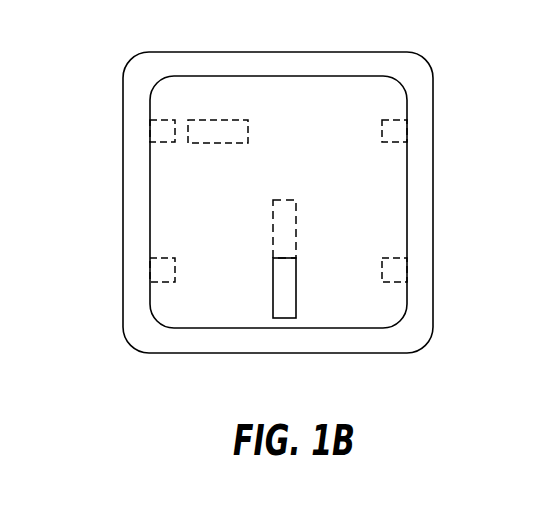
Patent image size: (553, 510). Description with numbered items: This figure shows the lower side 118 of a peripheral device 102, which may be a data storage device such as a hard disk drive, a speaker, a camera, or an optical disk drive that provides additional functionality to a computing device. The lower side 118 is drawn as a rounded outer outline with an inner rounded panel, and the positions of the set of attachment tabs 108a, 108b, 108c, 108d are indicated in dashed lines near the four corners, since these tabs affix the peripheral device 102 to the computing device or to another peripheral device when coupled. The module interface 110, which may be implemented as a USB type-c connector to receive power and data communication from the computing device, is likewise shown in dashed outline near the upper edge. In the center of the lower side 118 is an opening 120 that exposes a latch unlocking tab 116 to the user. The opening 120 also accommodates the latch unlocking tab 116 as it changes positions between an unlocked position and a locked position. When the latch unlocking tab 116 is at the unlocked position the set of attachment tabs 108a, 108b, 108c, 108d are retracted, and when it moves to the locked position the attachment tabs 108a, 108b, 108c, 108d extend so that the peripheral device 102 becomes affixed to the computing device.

The peripheral device 102 is at (181, 38).
The lower side 118 is at (438, 55).
The attachment tab 108a is at (395, 120).
The attachment tab 108b is at (386, 258).
The attachment tab 108c is at (168, 120).
The attachment tab 108d is at (168, 258).
The module interface 110 is at (201, 120).
The latch unlocking tab 116 is at (296, 288).
The opening 120 is at (263, 253).